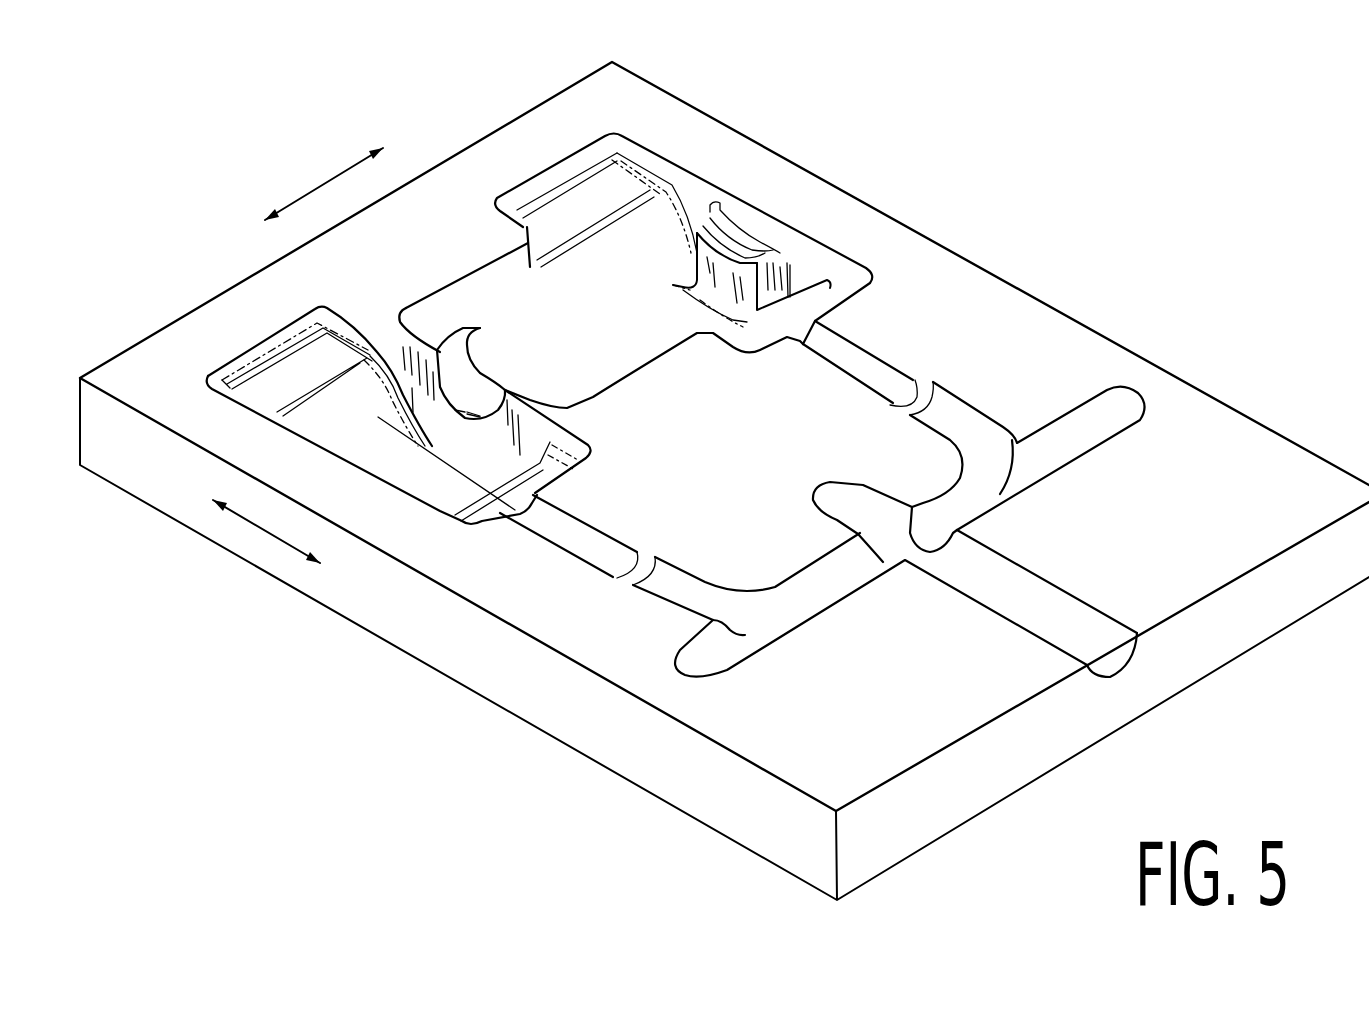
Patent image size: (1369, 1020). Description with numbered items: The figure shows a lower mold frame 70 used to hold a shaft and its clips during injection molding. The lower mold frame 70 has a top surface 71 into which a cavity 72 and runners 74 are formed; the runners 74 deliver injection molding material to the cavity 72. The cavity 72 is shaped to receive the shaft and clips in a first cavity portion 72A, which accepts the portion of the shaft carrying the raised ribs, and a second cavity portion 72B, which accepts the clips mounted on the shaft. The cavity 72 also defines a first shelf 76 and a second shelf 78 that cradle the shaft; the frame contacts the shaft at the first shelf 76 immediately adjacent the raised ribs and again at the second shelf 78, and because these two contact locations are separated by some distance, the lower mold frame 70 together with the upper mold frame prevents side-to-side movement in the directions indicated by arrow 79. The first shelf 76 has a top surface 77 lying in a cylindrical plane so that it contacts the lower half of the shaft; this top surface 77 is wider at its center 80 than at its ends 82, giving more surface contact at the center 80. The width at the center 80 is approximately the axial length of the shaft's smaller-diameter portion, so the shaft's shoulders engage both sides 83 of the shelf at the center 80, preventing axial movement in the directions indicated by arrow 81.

The lower mold frame 70 is at (1026, 272).
The top surface 71 is at (810, 183).
The cavity 72 is at (530, 296).
The first cavity portion 72A is at (370, 438).
The second cavity portion 72B is at (587, 347).
The runners 74 is at (969, 579).
The first shelf 76 is at (436, 380).
The top surface 77 is at (467, 410).
The second shelf 78 is at (721, 230).
The arrow 79 is at (252, 526).
The center 80 is at (467, 414).
The arrow 81 is at (327, 183).
The ends 82 is at (478, 329).
The sides 83 is at (463, 408).